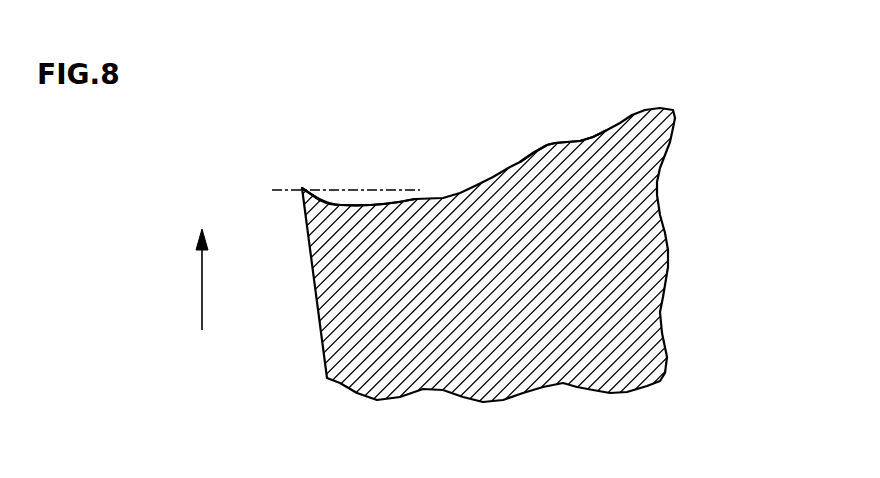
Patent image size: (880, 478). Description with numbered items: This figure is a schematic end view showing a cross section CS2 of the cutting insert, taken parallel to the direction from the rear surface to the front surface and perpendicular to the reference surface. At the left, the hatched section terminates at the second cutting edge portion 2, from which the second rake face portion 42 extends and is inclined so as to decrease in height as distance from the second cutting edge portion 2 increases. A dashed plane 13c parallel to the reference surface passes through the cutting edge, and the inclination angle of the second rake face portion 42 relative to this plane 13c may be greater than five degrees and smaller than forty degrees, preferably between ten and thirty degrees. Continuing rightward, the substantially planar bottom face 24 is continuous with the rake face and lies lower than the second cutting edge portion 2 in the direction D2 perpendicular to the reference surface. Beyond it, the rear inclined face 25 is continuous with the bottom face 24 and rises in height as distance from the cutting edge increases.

The second cutting edge portion 2 is at (302, 188).
The second rake face portion 42 is at (334, 201).
The bottom face 24 is at (415, 198).
The rear inclined face 25 is at (567, 141).
The plane 13c is at (283, 192).
The cross section CS2 is at (646, 76).
The direction D2 is at (203, 293).